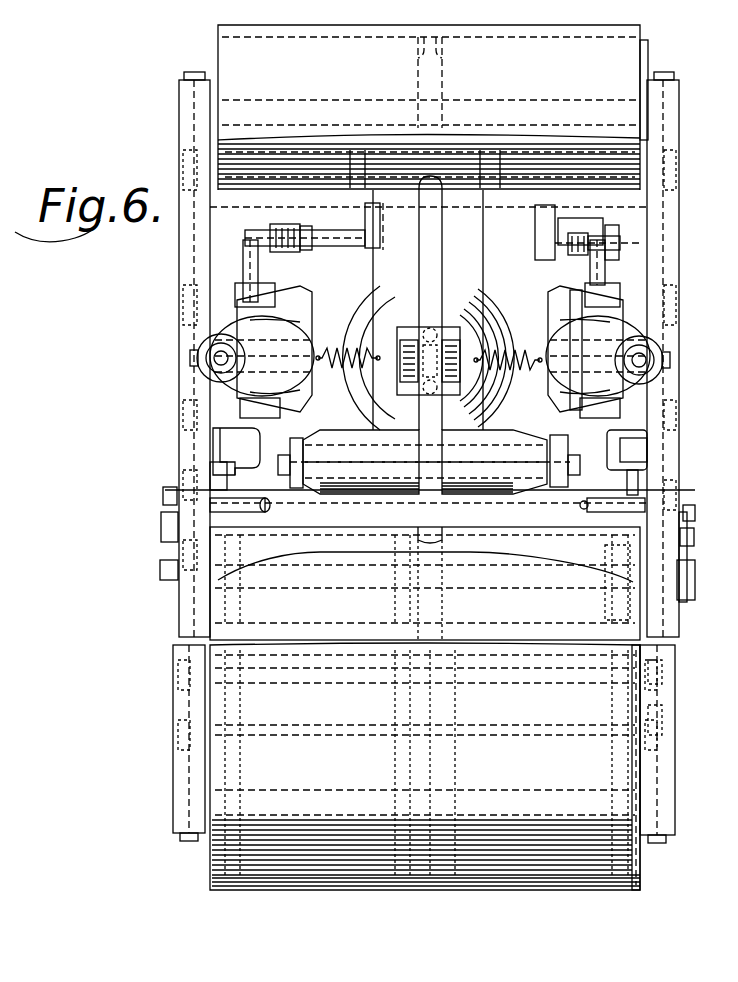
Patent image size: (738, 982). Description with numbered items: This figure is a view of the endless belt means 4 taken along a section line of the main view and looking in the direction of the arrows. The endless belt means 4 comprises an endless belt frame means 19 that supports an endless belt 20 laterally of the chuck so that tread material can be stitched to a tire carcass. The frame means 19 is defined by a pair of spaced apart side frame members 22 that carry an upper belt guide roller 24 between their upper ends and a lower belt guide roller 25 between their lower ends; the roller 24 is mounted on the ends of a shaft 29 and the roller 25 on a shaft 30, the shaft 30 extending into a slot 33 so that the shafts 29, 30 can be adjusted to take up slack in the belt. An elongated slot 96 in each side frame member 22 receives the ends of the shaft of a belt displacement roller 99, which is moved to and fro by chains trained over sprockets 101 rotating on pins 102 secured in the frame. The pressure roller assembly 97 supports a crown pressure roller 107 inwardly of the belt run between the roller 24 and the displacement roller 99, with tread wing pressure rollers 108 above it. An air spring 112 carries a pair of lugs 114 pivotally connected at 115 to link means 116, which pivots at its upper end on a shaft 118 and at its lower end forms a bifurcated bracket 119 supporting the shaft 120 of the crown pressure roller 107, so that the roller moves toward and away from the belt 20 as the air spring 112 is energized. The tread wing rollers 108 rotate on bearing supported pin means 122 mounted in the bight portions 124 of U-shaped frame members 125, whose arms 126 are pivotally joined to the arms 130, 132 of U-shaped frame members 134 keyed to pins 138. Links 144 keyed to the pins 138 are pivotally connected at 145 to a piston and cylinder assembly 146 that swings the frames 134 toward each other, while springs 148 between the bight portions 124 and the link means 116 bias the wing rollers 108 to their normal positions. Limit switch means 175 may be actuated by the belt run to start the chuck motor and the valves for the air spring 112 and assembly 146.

The endless belt means 4 is at (715, 423).
The endless belt frame means 19 is at (170, 248).
The endless belt 20 is at (640, 28).
The side frame members 22 is at (178, 442).
The upper belt guide roller 24 is at (648, 52).
The lower belt guide roller 25 is at (637, 866).
The shaft 29 is at (572, 105).
The shaft 30 is at (554, 804).
The slot 33 is at (677, 728).
The elongated slot 96 is at (163, 572).
The pressure roller assembly 97 is at (334, 341).
The belt displacement roller 99 is at (540, 533).
The sprockets 101 is at (163, 493).
The pins 102 is at (163, 521).
The crown pressure roller 107 is at (495, 438).
The tread wing pressure rollers 108 is at (206, 345).
The air spring 112 is at (493, 312).
The lugs 114 is at (444, 343).
The pivotal connection 115 is at (374, 330).
The link means 116 is at (484, 250).
The shaft 118 is at (613, 180).
The bifurcated bracket 119 is at (298, 438).
The shaft 120 is at (575, 462).
The bearing supported pin means 122 is at (215, 366).
The bight portions 124 is at (310, 306).
The U-shaped frame members 125 is at (236, 295).
The arms 126 is at (641, 300).
The arm 130 is at (589, 295).
The arm 132 is at (583, 419).
The U-shaped frame members 134 is at (243, 275).
The pin 138 is at (600, 266).
The links 144 is at (244, 242).
The pivotal connection 145 is at (580, 220).
The piston and cylinder assembly 146 is at (366, 218).
The springs 148 is at (328, 434).
The limit switch means 175 is at (633, 453).